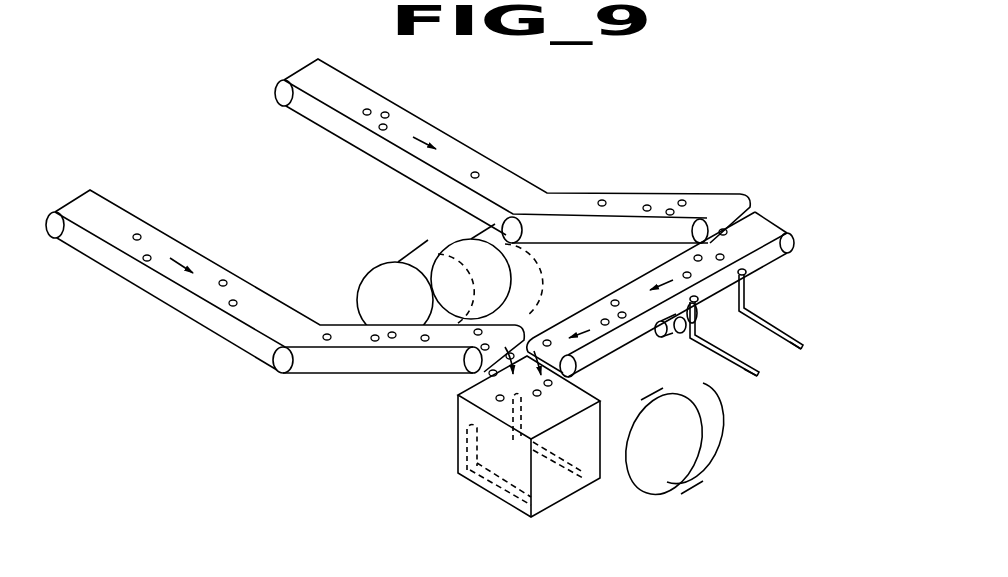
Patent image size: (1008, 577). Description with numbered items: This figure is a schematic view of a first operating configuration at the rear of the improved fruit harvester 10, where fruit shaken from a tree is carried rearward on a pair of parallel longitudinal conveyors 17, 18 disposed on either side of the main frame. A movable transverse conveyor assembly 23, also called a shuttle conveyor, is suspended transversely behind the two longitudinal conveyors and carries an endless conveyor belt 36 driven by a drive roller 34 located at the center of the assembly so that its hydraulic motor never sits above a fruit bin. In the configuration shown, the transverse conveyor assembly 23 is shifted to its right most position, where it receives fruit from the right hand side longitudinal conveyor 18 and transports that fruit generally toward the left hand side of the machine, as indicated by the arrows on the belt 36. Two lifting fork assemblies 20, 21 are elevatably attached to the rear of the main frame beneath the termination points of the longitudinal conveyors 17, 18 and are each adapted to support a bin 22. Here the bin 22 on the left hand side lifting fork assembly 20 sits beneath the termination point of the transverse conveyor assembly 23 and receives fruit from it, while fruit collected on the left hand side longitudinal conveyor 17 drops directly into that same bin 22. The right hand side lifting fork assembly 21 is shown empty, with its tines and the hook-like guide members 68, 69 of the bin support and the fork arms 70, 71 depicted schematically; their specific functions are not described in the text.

The fruit harvester 10 is at (641, 106).
The longitudinal conveyor 17 is at (225, 265).
The longitudinal conveyor 18 is at (480, 146).
The lifting fork assembly 20 is at (458, 439).
The lifting fork assembly 21 is at (751, 293).
The bin 22 is at (456, 413).
The transverse conveyor assembly 23 is at (780, 216).
The drive roller 34 is at (683, 333).
The conveyor belt 36 is at (599, 297).
The guide rail 68 is at (535, 503).
The guide rail 69 is at (584, 476).
The hook arm 70 is at (758, 378).
The hook arm 71 is at (804, 351).